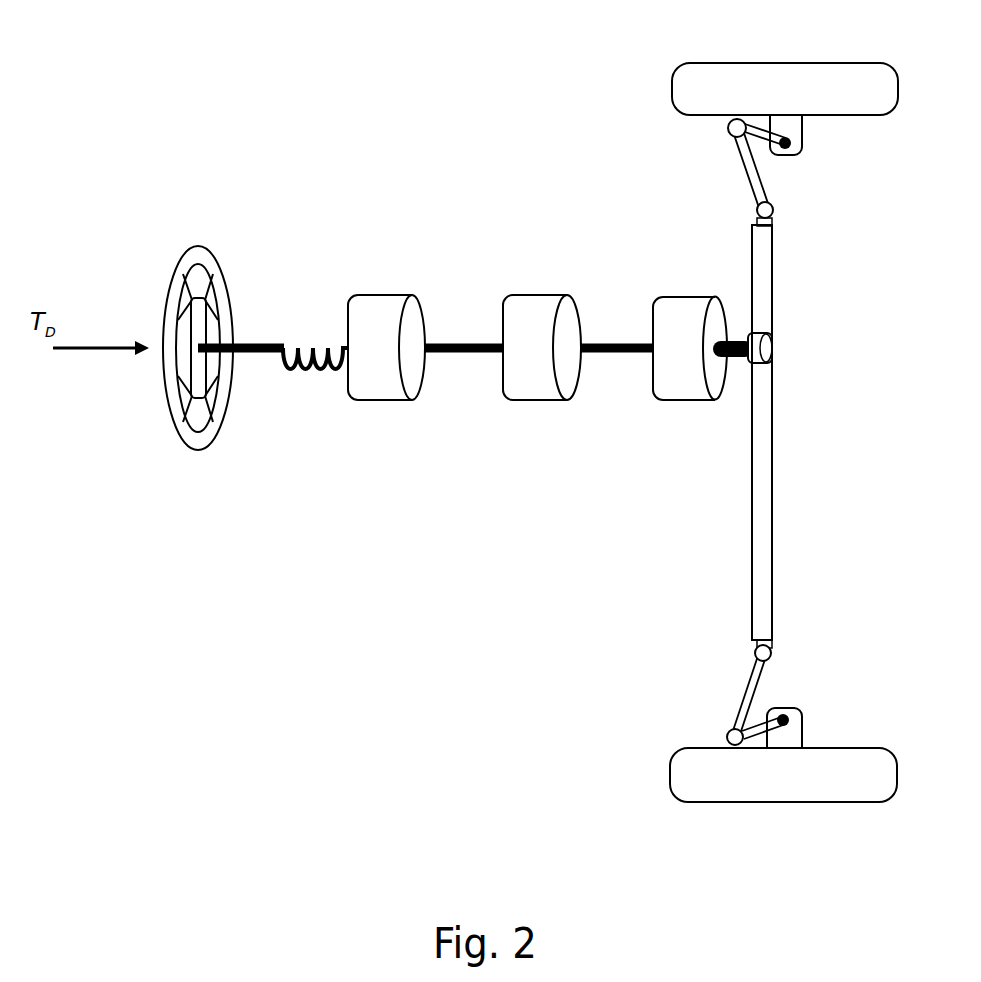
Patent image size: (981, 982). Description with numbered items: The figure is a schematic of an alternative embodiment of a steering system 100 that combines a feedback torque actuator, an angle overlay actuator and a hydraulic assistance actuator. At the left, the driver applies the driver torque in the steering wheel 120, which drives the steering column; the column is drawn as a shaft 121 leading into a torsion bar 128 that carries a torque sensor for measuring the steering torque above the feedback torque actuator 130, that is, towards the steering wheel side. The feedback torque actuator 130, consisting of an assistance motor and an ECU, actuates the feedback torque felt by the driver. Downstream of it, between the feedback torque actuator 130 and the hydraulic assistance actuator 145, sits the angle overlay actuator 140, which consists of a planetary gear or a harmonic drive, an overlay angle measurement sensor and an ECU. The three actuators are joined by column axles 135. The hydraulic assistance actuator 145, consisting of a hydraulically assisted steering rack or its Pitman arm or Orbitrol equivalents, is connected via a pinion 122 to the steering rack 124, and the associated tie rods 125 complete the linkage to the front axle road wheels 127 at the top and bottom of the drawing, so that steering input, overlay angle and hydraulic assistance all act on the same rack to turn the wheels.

The steering system 100 is at (524, 112).
The steering wheel 120 is at (182, 455).
The steering shaft 121 is at (255, 333).
The pinion 122 is at (783, 347).
The steering rack 124 is at (782, 483).
The tie rods 125 is at (738, 163).
The front axle road wheels 127 is at (850, 123).
The torsion bar 128 is at (323, 335).
The feedback torque actuator 130 is at (385, 408).
The column axles 135 is at (463, 335).
The angle overlay actuator 140 is at (540, 413).
The hydraulic assistance actuator 145 is at (683, 413).